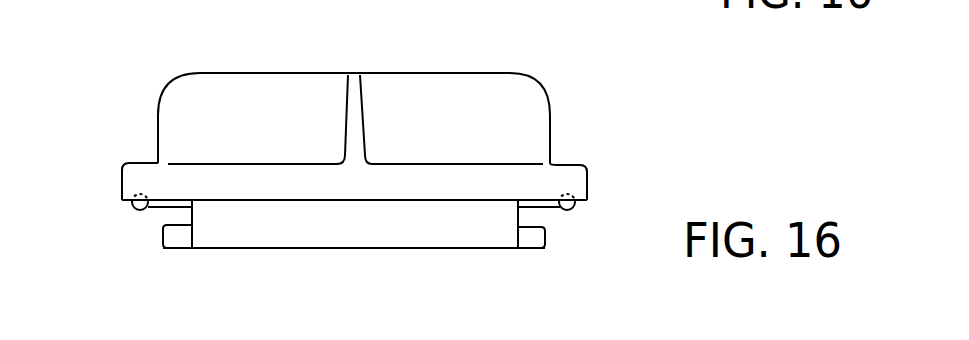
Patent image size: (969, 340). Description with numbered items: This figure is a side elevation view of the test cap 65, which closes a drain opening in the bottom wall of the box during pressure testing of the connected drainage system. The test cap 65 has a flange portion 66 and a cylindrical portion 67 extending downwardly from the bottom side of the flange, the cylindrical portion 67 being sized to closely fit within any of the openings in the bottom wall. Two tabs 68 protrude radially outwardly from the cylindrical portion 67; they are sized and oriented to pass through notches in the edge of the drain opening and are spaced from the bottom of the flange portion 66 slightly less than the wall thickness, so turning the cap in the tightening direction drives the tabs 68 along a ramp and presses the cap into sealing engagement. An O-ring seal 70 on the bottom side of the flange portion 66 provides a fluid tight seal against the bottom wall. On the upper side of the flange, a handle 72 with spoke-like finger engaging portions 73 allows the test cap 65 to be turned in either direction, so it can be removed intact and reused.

The test cap 65 is at (360, 112).
The flange portion 66 is at (565, 172).
The cylindrical portion 67 is at (503, 217).
The tabs 68 is at (173, 238).
The O-ring seal 70 is at (574, 206).
The handle 72 is at (287, 71).
The spoke-like finger engaging portions 73 is at (493, 93).